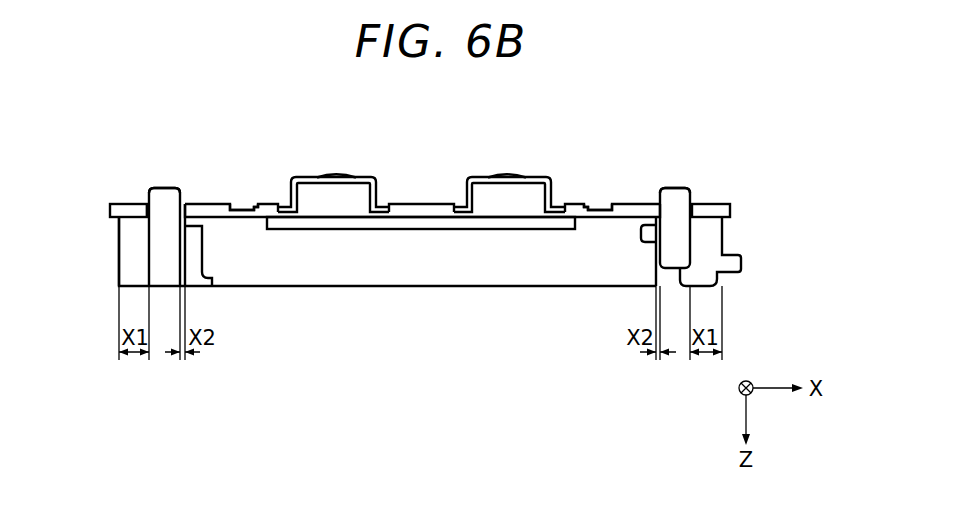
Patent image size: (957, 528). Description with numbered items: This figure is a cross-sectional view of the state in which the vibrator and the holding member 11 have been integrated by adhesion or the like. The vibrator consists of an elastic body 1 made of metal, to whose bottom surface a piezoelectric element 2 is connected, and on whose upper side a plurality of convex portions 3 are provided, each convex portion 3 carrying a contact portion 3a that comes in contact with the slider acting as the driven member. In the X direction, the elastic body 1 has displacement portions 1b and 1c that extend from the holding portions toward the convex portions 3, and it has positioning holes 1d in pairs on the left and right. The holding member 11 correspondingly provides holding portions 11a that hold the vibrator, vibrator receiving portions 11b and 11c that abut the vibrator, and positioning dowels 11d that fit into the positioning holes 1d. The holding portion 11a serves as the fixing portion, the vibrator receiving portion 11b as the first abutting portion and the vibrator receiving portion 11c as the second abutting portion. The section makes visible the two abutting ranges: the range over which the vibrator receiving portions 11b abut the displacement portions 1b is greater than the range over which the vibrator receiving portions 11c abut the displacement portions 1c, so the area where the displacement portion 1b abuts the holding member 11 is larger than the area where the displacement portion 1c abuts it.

The elastic body 1 is at (405, 203).
The displacement portion 1b is at (110, 208).
The displacement portion 1c is at (213, 203).
The positioning hole 1d is at (142, 203).
The piezoelectric element 2 is at (403, 230).
The convex portion 3 is at (292, 192).
The contact portion 3a is at (334, 175).
The holding member 11 is at (550, 265).
The holding portion 11a is at (167, 218).
The vibrator receiving portion 11b is at (127, 229).
The vibrator receiving portion 11c is at (188, 219).
The positioning dowel 11d is at (163, 188).